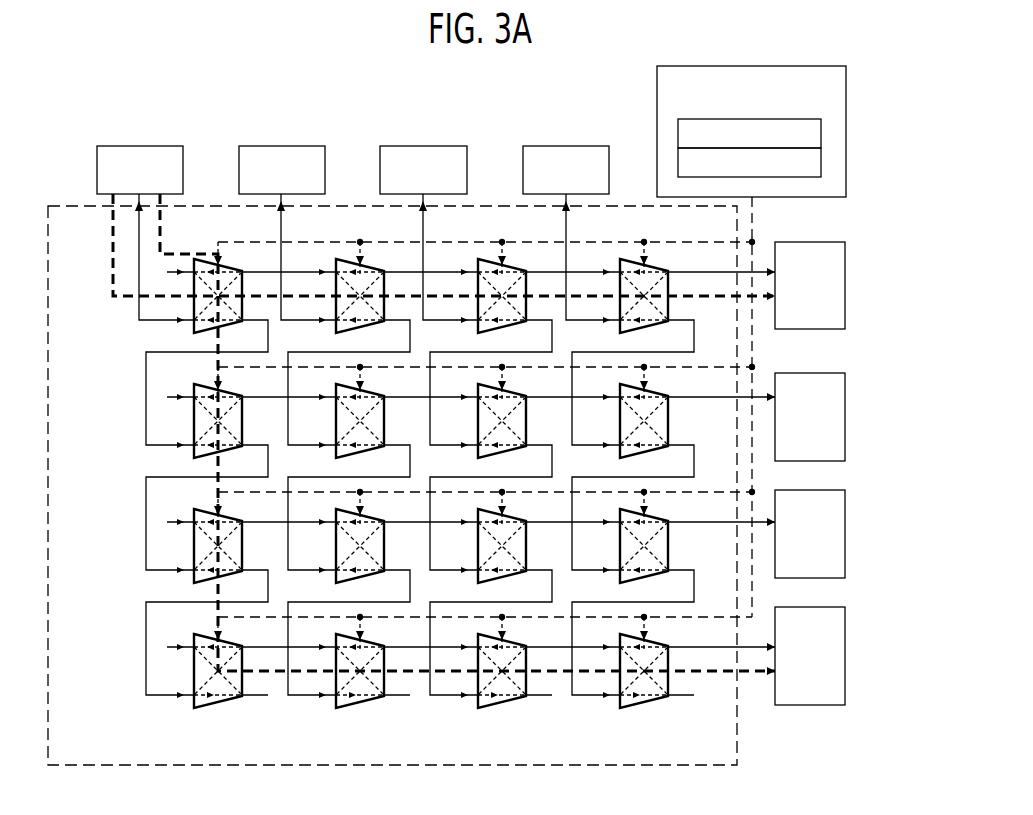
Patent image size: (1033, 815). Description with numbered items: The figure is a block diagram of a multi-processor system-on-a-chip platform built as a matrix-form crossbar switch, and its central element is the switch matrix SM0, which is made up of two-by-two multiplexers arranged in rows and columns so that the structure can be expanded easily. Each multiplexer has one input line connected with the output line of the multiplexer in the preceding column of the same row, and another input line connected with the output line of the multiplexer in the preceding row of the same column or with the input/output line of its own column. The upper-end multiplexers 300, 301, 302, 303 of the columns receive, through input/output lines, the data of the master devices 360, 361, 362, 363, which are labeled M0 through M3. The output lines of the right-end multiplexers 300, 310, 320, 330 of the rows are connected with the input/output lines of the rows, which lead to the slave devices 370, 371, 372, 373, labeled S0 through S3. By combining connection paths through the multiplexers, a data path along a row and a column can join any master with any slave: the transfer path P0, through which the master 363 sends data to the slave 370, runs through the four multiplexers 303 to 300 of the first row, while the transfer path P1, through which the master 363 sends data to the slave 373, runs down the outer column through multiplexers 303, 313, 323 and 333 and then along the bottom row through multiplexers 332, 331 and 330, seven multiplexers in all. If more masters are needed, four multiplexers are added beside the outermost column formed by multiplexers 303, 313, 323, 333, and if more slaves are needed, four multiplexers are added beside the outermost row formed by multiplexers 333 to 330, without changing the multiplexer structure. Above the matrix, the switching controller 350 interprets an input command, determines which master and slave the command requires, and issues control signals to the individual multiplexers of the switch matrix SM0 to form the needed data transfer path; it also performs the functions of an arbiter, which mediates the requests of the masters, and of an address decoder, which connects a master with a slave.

The 2×2 multiplexer 300 is at (631, 258).
The 2×2 multiplexer 301 is at (489, 258).
The 2×2 multiplexer 302 is at (347, 258).
The 2×2 multiplexer 303 is at (207, 258).
The 2×2 multiplexer 310 is at (668, 413).
The 2×2 multiplexer 313 is at (194, 420).
The 2×2 multiplexer 320 is at (668, 538).
The 2×2 multiplexer 323 is at (194, 547).
The 2×2 multiplexer 330 is at (646, 704).
The 2×2 multiplexer 331 is at (504, 704).
The 2×2 multiplexer 332 is at (362, 704).
The 2×2 multiplexer 333 is at (194, 672).
The switching controller 350 is at (846, 92).
The master device 360 is at (565, 144).
The master device 361 is at (423, 144).
The master device 362 is at (282, 144).
The master device 363 is at (140, 144).
The slave device 370 is at (845, 282).
The slave device 371 is at (845, 408).
The slave device 372 is at (845, 520).
The slave device 373 is at (845, 640).
The switch matrix SM0 is at (392, 766).
The transfer path P0 is at (113, 280).
The transfer path P1 is at (160, 233).